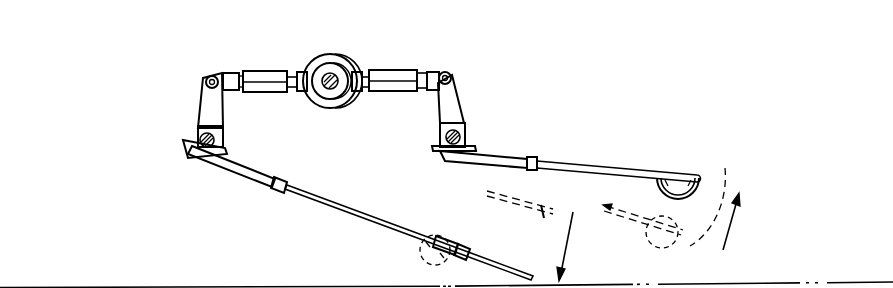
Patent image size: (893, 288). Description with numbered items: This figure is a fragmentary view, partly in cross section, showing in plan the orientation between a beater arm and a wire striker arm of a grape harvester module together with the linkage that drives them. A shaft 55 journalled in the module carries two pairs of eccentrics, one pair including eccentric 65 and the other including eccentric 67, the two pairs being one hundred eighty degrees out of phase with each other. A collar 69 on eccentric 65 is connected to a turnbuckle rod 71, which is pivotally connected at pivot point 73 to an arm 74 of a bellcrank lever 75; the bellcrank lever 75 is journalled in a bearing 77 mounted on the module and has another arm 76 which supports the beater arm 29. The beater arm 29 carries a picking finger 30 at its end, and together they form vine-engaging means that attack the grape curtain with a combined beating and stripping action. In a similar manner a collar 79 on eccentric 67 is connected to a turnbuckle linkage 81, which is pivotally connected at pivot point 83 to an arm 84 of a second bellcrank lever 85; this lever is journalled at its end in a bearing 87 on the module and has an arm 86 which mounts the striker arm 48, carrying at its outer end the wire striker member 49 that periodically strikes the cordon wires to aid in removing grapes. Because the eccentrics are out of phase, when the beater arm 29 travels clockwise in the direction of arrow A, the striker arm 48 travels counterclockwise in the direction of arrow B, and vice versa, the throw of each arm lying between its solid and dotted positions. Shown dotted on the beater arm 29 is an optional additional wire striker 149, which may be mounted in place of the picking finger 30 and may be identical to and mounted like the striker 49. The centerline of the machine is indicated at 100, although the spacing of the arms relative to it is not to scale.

The centerline of the machine 100 is at (82, 286).
The beater arm 29 is at (320, 203).
The picking finger 30 is at (538, 212).
The arm 48 is at (626, 172).
The wire striker member 49 is at (698, 182).
The shaft 55 is at (366, 53).
The eccentric 65 is at (331, 74).
The eccentric 67 is at (299, 60).
The collar 69 is at (355, 105).
The turnbuckle rod 71 is at (270, 42).
The pivot point 73 is at (211, 74).
The arm of bellcrank lever 75 74 is at (208, 100).
The bellcrank lever 75 is at (198, 129).
The arm of bellcrank lever 75 76 is at (232, 172).
The bearing 77 is at (182, 7).
The collar 79 is at (312, 101).
The turnbuckle linkage 81 is at (398, 70).
The pivot point 83 is at (450, 72).
The arm of bellcrank lever 85 84 is at (457, 90).
The bellcrank lever 85 is at (468, 133).
The arm of bellcrank lever 85 86 is at (520, 152).
The bearing 87 is at (474, 6).
The wire striker 149 is at (420, 266).
The arrow A is at (576, 230).
The arrow B is at (733, 229).